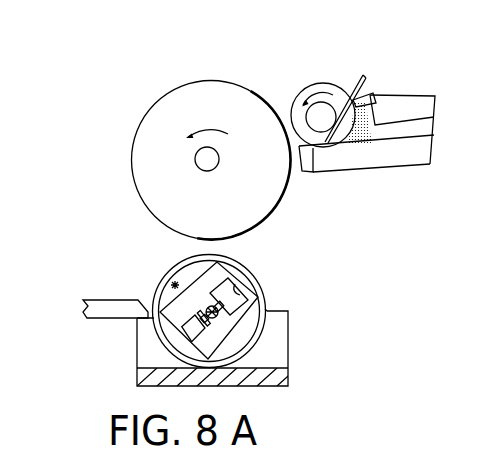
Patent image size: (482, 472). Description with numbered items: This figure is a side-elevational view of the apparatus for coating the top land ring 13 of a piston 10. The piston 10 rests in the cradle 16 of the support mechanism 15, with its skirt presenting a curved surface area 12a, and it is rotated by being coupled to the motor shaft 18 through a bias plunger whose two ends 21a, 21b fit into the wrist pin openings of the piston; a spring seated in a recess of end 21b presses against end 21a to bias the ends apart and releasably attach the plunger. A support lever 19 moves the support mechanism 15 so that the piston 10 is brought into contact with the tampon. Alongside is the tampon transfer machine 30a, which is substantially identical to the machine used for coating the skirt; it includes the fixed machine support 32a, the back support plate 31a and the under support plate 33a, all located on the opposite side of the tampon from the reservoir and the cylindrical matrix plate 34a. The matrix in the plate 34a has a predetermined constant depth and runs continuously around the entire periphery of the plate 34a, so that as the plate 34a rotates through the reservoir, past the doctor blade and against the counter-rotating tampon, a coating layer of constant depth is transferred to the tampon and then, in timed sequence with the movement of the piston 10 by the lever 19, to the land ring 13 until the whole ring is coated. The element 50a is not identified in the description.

The piston 10 is at (280, 243).
The curved surface area 12a is at (168, 273).
The top land ring 13 is at (158, 280).
The support mechanism 15 is at (291, 378).
The cradle 16 is at (284, 340).
The motor shaft 18 is at (215, 315).
The support lever 19 is at (85, 312).
The plunger end 21a is at (230, 300).
The plunger end 21b is at (230, 300).
The tampon transfer machine 30a is at (326, 74).
The back support plate 31a is at (423, 102).
The fixed machine support 32a is at (408, 86).
The under support plate 33a is at (415, 150).
The cylindrical matrix plate 34a is at (313, 143).
The drive wheel 50a is at (243, 90).